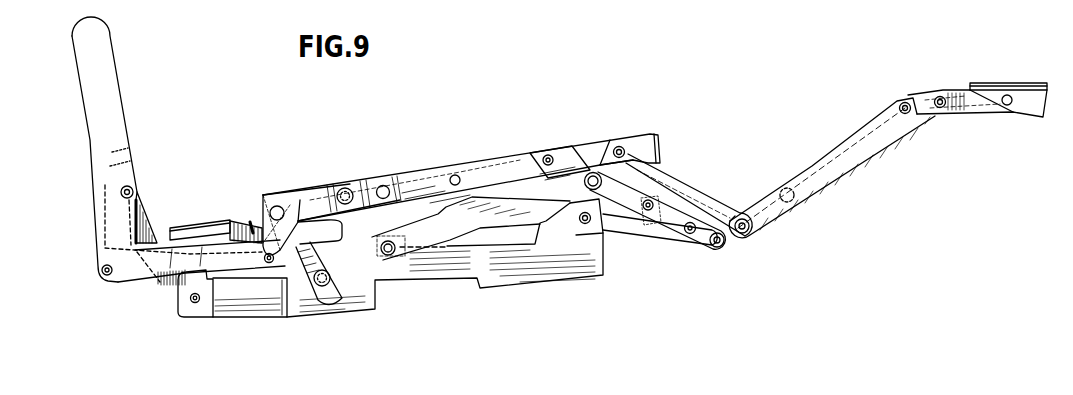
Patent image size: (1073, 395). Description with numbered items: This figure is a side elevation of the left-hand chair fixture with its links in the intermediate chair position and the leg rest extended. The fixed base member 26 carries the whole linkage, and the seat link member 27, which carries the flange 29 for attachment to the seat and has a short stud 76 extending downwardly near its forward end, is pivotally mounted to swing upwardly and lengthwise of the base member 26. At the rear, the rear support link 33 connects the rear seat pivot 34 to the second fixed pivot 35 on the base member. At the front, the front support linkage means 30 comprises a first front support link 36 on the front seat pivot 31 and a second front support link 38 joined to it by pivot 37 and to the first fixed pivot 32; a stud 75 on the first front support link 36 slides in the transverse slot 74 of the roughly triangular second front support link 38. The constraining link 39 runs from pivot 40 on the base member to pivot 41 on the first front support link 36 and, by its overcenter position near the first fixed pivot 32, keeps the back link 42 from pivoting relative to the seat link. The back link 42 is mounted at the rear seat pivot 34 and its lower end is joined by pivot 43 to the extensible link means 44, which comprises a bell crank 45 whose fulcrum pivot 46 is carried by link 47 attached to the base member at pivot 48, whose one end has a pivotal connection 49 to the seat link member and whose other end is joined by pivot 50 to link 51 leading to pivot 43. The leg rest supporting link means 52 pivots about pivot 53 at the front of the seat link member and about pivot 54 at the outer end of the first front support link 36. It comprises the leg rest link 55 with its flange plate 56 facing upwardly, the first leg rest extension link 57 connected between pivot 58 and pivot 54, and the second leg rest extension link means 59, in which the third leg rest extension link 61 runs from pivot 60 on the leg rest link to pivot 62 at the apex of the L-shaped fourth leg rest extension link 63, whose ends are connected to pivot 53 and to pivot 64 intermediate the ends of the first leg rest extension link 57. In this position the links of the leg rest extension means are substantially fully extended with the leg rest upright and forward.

The base member 26 is at (218, 274).
The seat link member 27 is at (252, 218).
The flange 29 is at (215, 222).
The front support linkage means 30 is at (684, 248).
The front seat pivot 31 is at (548, 154).
The first fixed pivot 32 is at (578, 220).
The rear support link 33 is at (160, 278).
The rear seat pivot 34 is at (132, 190).
The second fixed pivot 35 is at (190, 302).
The first front support link 36 is at (572, 150).
The pivot 37 is at (690, 234).
The second front support link 38 is at (624, 224).
The constraining link 39 is at (446, 240).
The pivot 40 is at (388, 256).
The pivot 41 is at (593, 170).
The back link 42 is at (92, 178).
The pivot 43 is at (102, 279).
The extensible link means 44 is at (252, 220).
The bell crank 45 is at (315, 196).
The pivot 46 is at (277, 205).
The link 47 is at (310, 278).
The pivot 48 is at (325, 287).
The pivotal connection 49 is at (344, 187).
The pivot 50 is at (270, 264).
The link 51 is at (168, 240).
The leg rest supporting link means 52 is at (747, 197).
The pivot 53 is at (621, 146).
The pivot 54 is at (718, 248).
The leg rest link 55 is at (978, 114).
The flange plate 56 is at (1026, 83).
The first leg rest extension link 57 is at (882, 142).
The pivot 58 is at (940, 96).
The second leg rest extension link means 59 is at (784, 216).
The pivot 60 is at (905, 102).
The third leg rest extension link 61 is at (858, 136).
The pivot 62 is at (746, 234).
The fourth leg rest extension link 63 is at (680, 185).
The pivot 64 is at (785, 188).
The transverse slot 74 is at (645, 228).
The stud 75 is at (654, 212).
The stud 76 is at (455, 174).